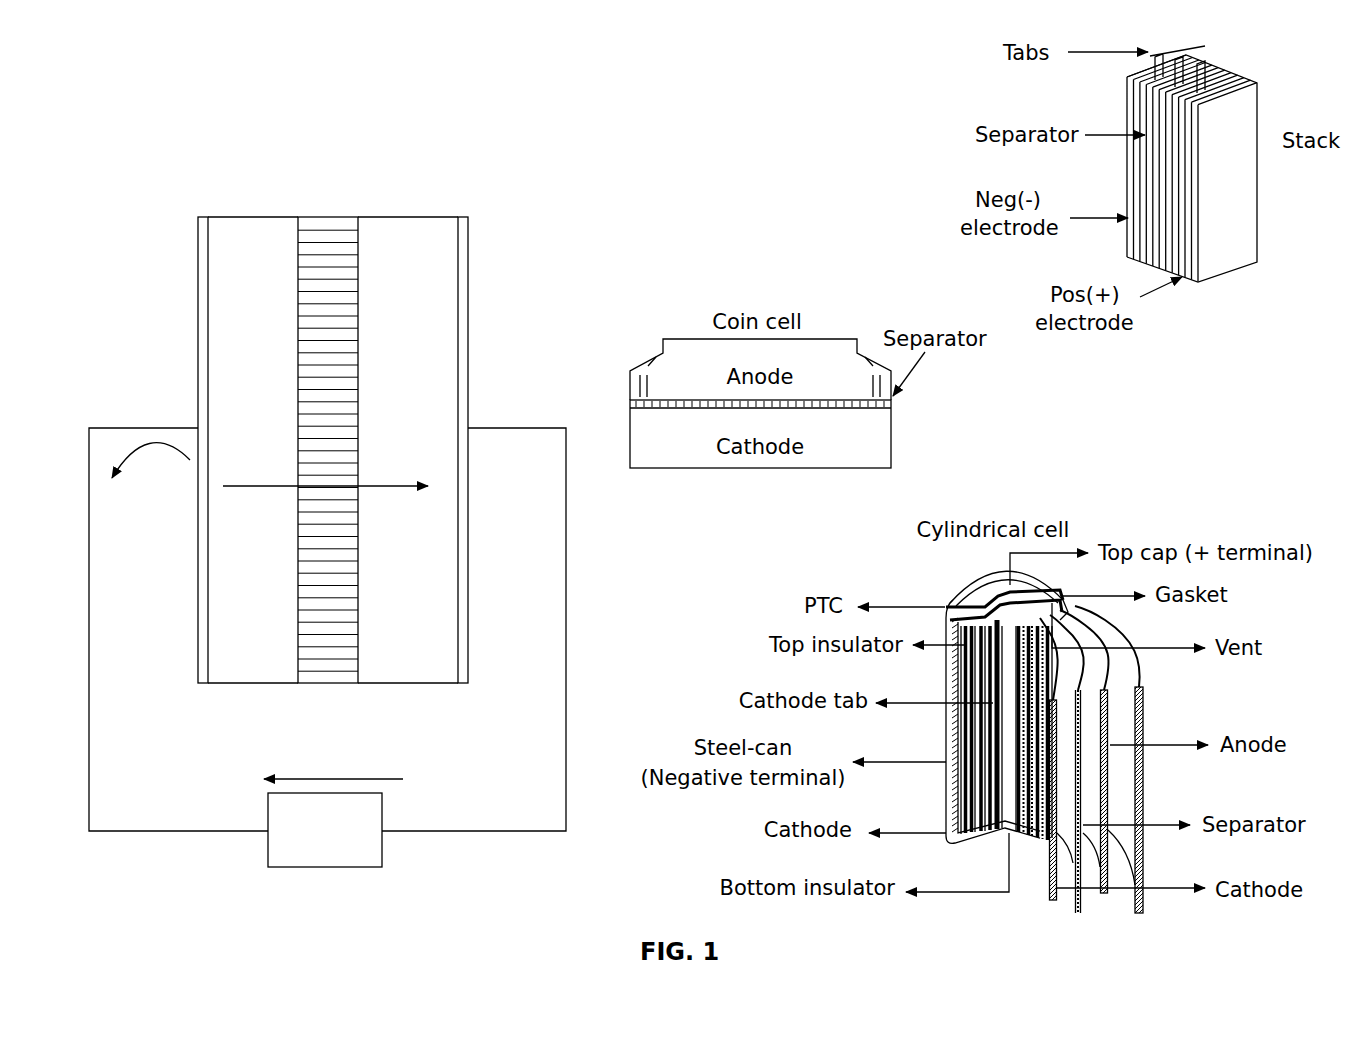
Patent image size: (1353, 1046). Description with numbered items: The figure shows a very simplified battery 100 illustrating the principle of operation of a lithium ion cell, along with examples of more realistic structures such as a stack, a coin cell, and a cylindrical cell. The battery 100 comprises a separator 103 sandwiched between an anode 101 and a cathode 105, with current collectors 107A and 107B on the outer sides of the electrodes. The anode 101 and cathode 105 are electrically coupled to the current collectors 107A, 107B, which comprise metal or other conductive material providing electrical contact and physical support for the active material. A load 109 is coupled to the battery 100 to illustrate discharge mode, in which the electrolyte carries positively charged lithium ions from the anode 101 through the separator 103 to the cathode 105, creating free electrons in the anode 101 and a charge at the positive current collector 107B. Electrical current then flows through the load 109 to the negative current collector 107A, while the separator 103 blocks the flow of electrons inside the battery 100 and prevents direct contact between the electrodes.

The battery 100 is at (156, 160).
The anode 101 is at (253, 450).
The separator 103 is at (330, 216).
The cathode 105 is at (408, 450).
The negative current collector 107A is at (197, 248).
The positive current collector 107B is at (468, 256).
The load 109 is at (325, 830).